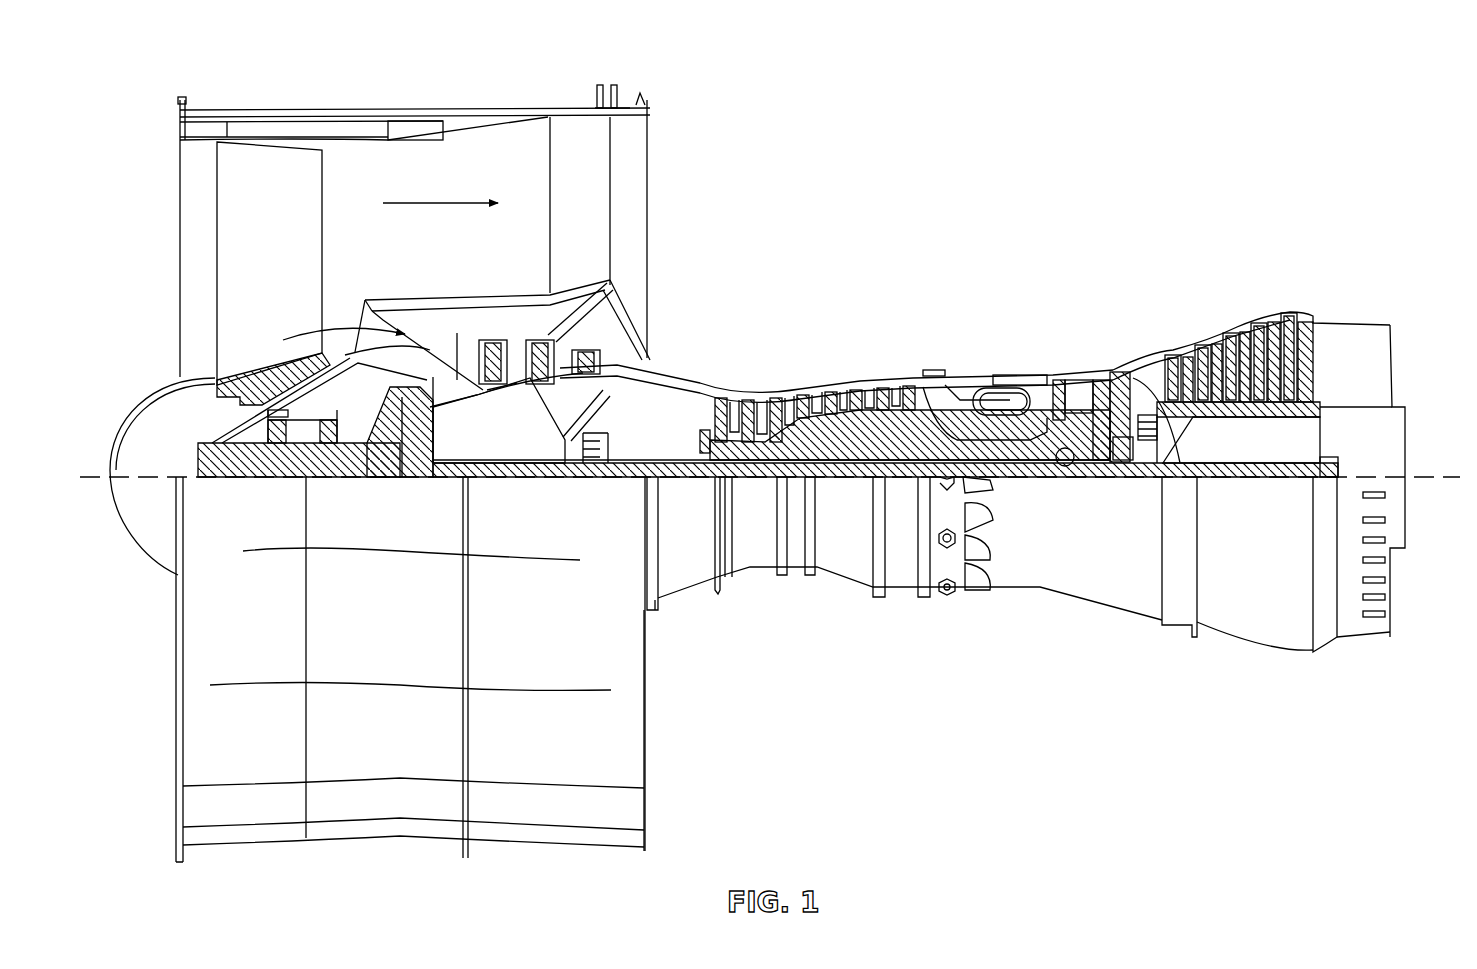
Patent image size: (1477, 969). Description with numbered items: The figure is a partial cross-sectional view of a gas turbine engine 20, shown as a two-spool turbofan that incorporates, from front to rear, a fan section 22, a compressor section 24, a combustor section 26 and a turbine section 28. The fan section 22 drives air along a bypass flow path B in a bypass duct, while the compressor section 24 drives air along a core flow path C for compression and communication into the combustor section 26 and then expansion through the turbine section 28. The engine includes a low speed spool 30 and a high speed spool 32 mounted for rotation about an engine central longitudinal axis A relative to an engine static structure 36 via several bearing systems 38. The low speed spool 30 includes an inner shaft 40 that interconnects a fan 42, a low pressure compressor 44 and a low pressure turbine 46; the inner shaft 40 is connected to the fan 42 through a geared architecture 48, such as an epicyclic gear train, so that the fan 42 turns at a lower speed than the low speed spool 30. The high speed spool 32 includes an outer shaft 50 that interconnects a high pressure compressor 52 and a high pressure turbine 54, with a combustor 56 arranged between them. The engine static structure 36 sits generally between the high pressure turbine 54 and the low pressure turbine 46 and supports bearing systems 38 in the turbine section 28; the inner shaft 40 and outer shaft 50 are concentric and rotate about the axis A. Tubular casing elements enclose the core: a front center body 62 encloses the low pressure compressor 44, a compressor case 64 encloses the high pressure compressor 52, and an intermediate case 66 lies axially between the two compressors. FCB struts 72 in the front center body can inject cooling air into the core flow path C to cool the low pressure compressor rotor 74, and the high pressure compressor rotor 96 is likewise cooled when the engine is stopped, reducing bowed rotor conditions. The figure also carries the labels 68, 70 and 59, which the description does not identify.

The gas turbine engine 20 is at (1258, 156).
The fan section 22 is at (368, 100).
The compressor section 24 is at (790, 320).
The combustor section 26 is at (973, 312).
The turbine section 28 is at (1165, 308).
The low speed spool 30 is at (850, 482).
The high speed spool 32 is at (897, 435).
The engine static structure 36 is at (900, 597).
The bearing systems 38 is at (275, 455).
The inner shaft 40 is at (675, 473).
The fan 42 is at (282, 249).
The low pressure compressor 44 is at (562, 335).
The low pressure turbine 46 is at (1243, 337).
The geared architecture 48 is at (425, 430).
The outer shaft 50 is at (1068, 475).
The high pressure compressor 52 is at (825, 432).
The high pressure turbine 54 is at (1078, 375).
The combustor 56 is at (1010, 400).
The mid-turbine frame 59 is at (1175, 420).
The front center body 62 is at (425, 328).
The compressor case 64 is at (855, 392).
The intermediate case 66 is at (680, 380).
The splitter 68 is at (420, 320).
The fan shaft 70 is at (380, 450).
The FCB strut 72 is at (465, 333).
The low pressure compressor rotor 74 is at (540, 370).
The high pressure compressor rotor 96 is at (848, 400).
The engine central longitudinal axis A is at (1425, 470).
The bypass flow path B is at (445, 200).
The core flow path C is at (300, 335).